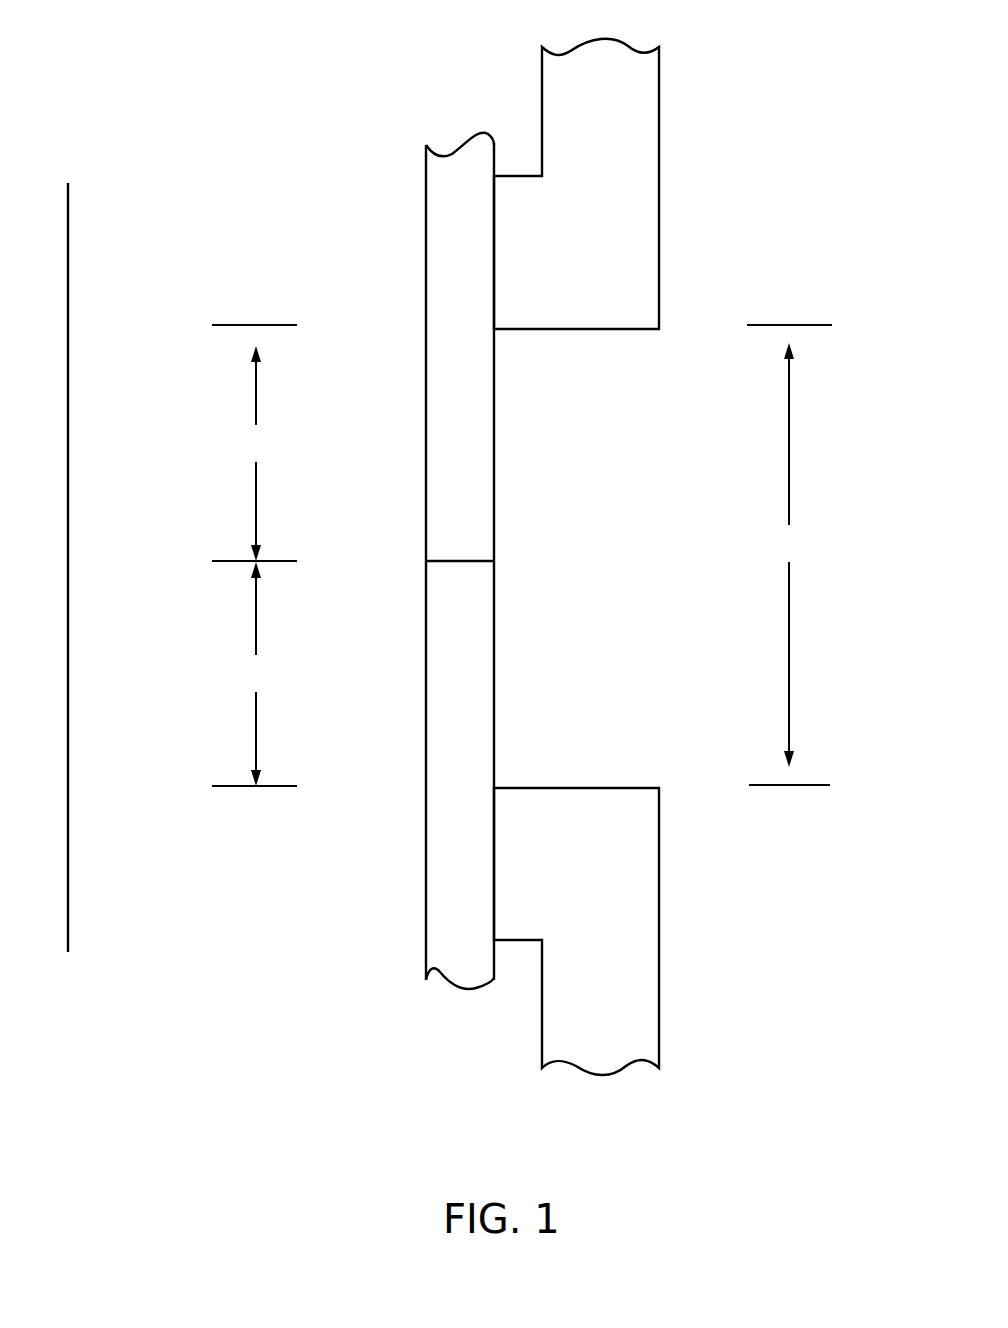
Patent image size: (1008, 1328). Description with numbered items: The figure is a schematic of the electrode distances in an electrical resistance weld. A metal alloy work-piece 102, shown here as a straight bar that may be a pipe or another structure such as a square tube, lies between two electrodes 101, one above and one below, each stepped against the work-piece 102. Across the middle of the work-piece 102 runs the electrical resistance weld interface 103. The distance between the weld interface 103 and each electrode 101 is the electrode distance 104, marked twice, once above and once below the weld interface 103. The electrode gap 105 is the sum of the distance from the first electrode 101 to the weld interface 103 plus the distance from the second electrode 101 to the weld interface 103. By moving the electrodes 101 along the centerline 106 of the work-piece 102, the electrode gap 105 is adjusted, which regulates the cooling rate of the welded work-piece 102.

The electrode 101 is at (690, 126).
The metal alloy work-piece 102 is at (398, 206).
The electrical resistance weld interface 103 is at (524, 563).
The electrode distance 104 is at (254, 555).
The electrode gap 105 is at (789, 555).
The centerline 106 is at (76, 588).